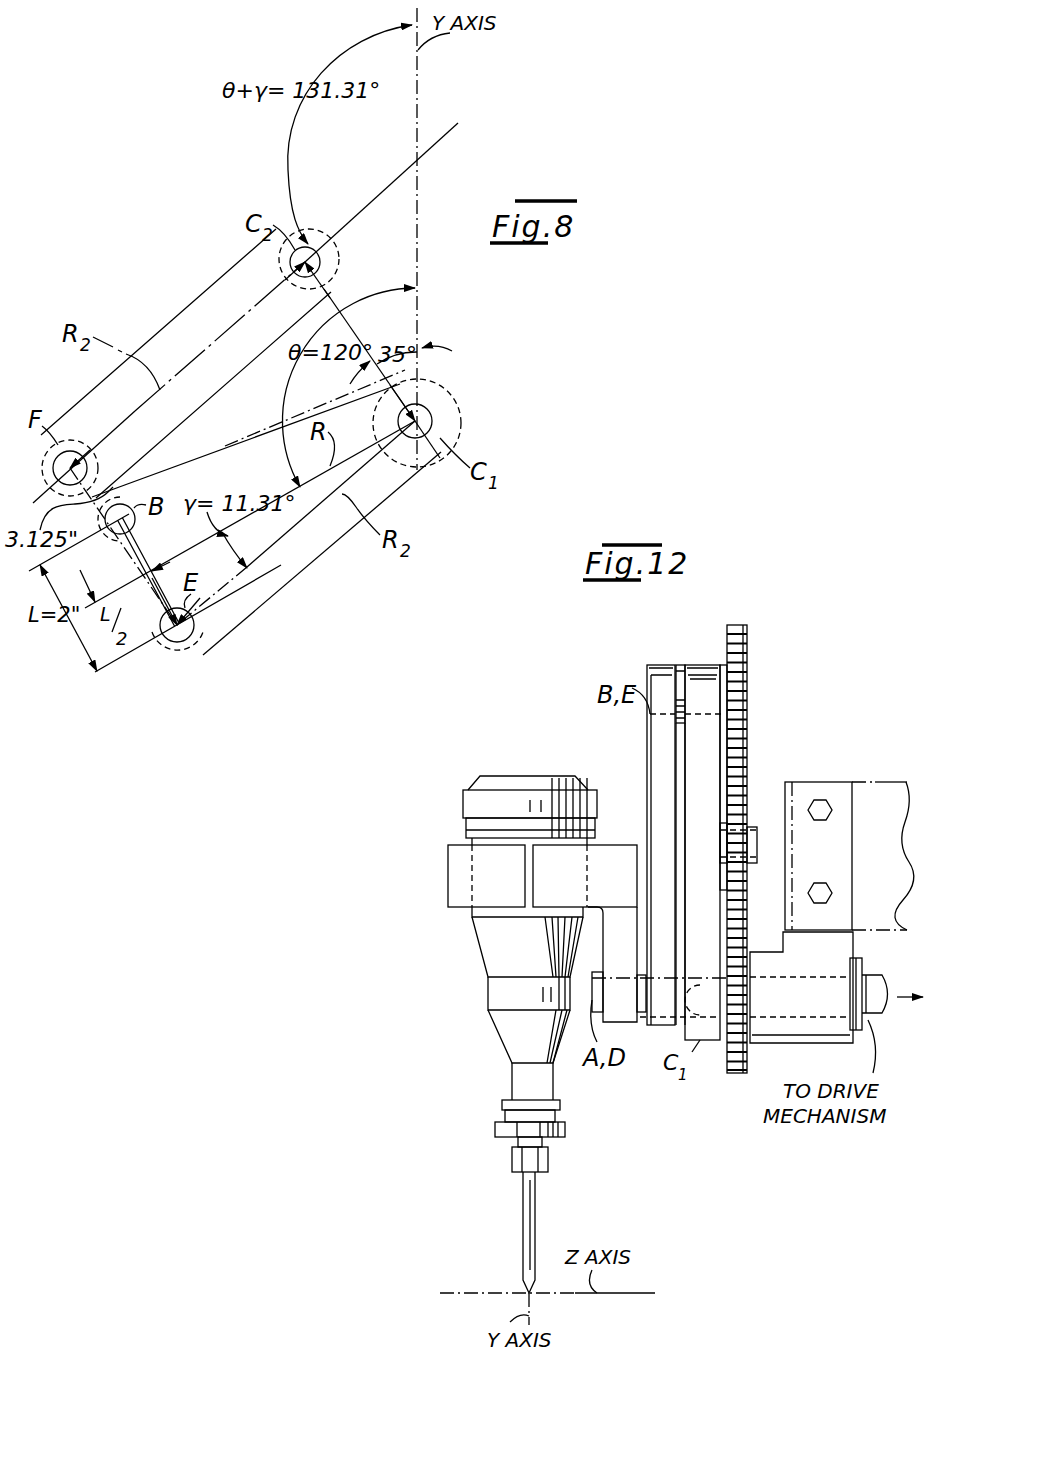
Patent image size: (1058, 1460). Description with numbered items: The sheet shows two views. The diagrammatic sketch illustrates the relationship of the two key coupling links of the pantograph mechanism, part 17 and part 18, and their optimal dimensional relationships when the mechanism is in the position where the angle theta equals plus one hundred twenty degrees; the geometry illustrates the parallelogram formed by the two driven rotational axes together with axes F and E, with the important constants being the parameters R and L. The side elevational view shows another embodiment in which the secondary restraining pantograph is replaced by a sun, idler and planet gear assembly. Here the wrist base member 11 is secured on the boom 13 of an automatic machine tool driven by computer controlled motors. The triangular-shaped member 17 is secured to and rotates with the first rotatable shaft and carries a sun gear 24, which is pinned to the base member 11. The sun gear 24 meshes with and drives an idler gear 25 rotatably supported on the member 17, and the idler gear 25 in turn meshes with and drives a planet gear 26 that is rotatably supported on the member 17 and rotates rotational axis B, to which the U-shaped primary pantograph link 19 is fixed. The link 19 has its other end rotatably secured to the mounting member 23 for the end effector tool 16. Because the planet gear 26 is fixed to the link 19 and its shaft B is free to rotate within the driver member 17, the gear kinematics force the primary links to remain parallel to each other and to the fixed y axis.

In FIG. 12, the wrist base member 11 is at (760, 1037).
In FIG. 12, the boom 13 is at (877, 787).
In FIG. 12, the end effector tool 16 is at (490, 943).
In FIG. 8, the triangular-shaped member 17 is at (277, 590).
In FIG. 12, the triangular-shaped member 17 is at (709, 747).
In FIG. 8, the coupling link 18 is at (217, 293).
In FIG. 12, the primary pantograph link 19 is at (660, 772).
In FIG. 12, the mounting member 23 is at (448, 862).
In FIG. 12, the sun gear 24 is at (733, 1075).
In FIG. 12, the idler gear 25 is at (730, 818).
In FIG. 12, the planet gear 26 is at (739, 848).